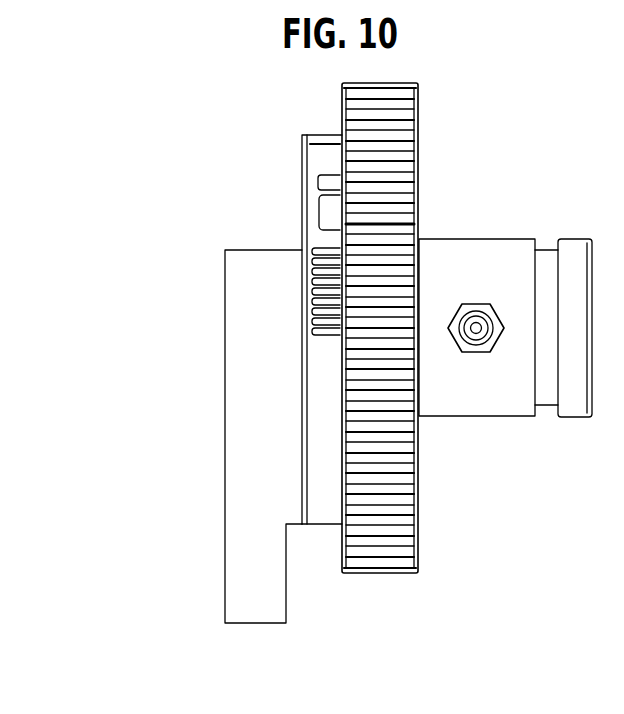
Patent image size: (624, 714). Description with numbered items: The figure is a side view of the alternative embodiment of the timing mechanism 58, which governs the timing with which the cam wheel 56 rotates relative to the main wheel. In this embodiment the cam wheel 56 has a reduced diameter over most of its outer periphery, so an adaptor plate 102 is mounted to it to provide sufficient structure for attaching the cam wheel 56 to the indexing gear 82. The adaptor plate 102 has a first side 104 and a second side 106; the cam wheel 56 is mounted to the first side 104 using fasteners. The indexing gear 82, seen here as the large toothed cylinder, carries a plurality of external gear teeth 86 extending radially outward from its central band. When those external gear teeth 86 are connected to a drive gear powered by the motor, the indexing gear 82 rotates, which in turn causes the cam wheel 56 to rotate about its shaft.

The cam wheel 56 is at (243, 530).
The timing mechanism 58 is at (473, 146).
The indexing gear 82 is at (392, 223).
The external gear teeth 86 is at (378, 115).
The adaptor plate 102 is at (314, 441).
The first side 104 is at (300, 182).
The second side 106 is at (347, 510).